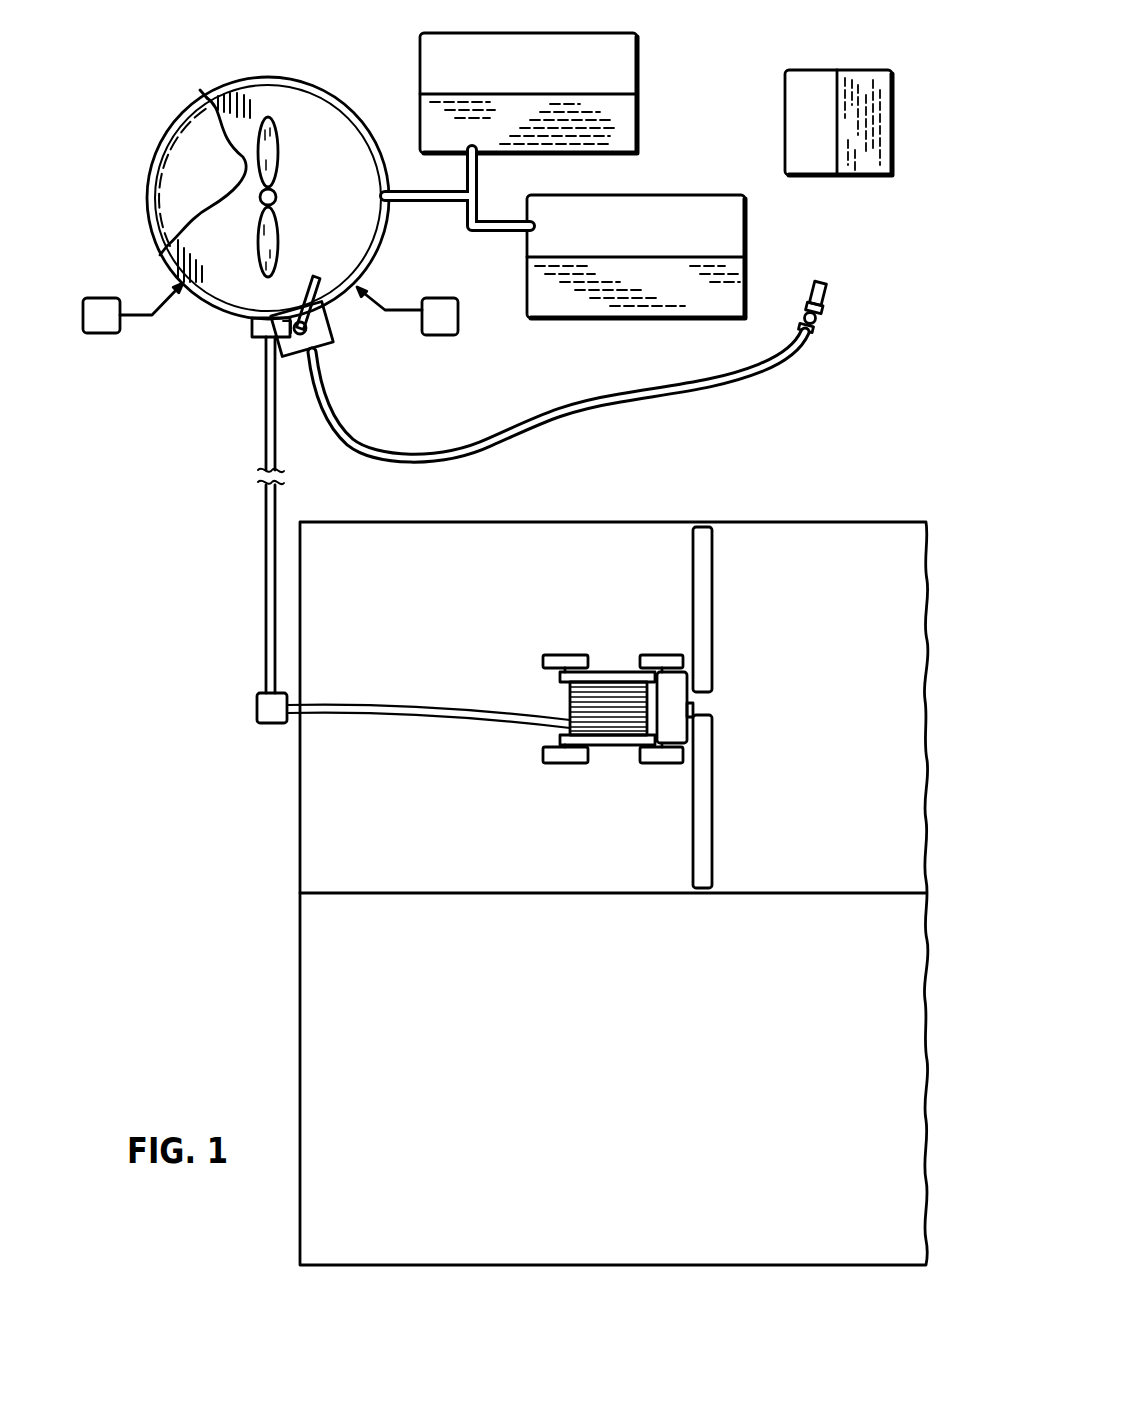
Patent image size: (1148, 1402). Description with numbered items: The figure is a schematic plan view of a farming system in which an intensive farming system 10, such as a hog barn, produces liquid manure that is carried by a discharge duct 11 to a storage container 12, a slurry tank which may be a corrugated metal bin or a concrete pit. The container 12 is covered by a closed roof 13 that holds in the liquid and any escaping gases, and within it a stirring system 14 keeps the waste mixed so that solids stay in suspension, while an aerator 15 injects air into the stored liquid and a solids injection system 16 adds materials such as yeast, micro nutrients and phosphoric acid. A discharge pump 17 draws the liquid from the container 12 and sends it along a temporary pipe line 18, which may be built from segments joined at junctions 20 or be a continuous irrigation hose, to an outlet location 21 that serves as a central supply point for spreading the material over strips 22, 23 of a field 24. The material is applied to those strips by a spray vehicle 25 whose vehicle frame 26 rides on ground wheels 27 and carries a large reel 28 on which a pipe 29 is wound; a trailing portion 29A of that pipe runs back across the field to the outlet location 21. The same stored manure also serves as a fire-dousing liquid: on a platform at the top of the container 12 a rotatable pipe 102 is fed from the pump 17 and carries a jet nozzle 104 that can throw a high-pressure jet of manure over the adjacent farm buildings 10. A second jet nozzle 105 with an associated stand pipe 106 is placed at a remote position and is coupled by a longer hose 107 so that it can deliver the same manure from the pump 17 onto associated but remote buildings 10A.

The intensive farming system 10 is at (643, 60).
The remote buildings 10A is at (828, 182).
The discharge duct 11 is at (440, 204).
The storage container 12 is at (305, 75).
The closed roof 13 is at (183, 147).
The stirring system 14 is at (284, 150).
The aerator 15 is at (440, 335).
The solids injection system 16 is at (108, 298).
The discharge pump 17 is at (252, 328).
The temporary pipe line 18 is at (280, 510).
The junctions 20 is at (265, 422).
The outlet location 21 is at (257, 712).
The field strip 22 is at (827, 549).
The field strip 23 is at (813, 916).
The field 24 is at (632, 506).
The spray vehicle 25 is at (740, 692).
The vehicle frame 26 is at (618, 672).
The ground wheels 27 is at (553, 657).
The reel 28 is at (618, 748).
The pipe 29 is at (575, 705).
The trailing portion 29A is at (435, 720).
The rotatable pipe 102 is at (332, 322).
The jet nozzle 104 is at (310, 279).
The second jet nozzle 105 is at (830, 293).
The stand pipe 106 is at (850, 338).
The longer hose 107 is at (748, 387).